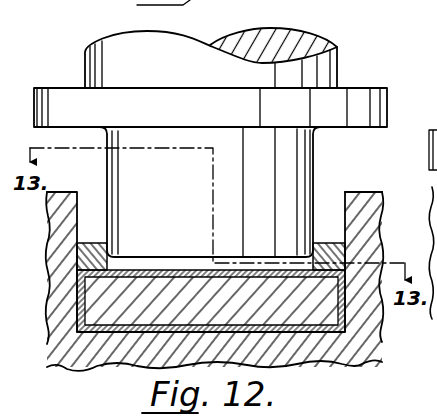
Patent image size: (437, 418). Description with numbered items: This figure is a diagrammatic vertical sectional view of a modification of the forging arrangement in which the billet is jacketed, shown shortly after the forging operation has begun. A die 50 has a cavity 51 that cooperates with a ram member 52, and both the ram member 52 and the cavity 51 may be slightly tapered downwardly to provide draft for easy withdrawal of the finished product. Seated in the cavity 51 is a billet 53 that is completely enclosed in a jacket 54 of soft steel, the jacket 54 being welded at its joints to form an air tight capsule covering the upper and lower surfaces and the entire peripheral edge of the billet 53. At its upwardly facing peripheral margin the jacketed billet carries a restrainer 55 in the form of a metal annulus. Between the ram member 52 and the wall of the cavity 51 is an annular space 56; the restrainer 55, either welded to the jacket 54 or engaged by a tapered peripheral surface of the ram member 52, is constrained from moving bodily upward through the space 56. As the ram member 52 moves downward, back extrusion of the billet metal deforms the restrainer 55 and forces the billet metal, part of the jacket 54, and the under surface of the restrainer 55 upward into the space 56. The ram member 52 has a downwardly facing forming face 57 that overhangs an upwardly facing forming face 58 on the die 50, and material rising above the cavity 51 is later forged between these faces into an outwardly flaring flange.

The die 50 is at (325, 352).
The cavity 51 is at (77, 222).
The ram member 52 is at (313, 168).
The billet 53 is at (150, 320).
The jacket 54 is at (81, 334).
The restrainer 55 is at (49, 272).
The annular space 56 is at (96, 202).
The forming face 57 is at (425, 172).
The forming face 58 is at (432, 188).